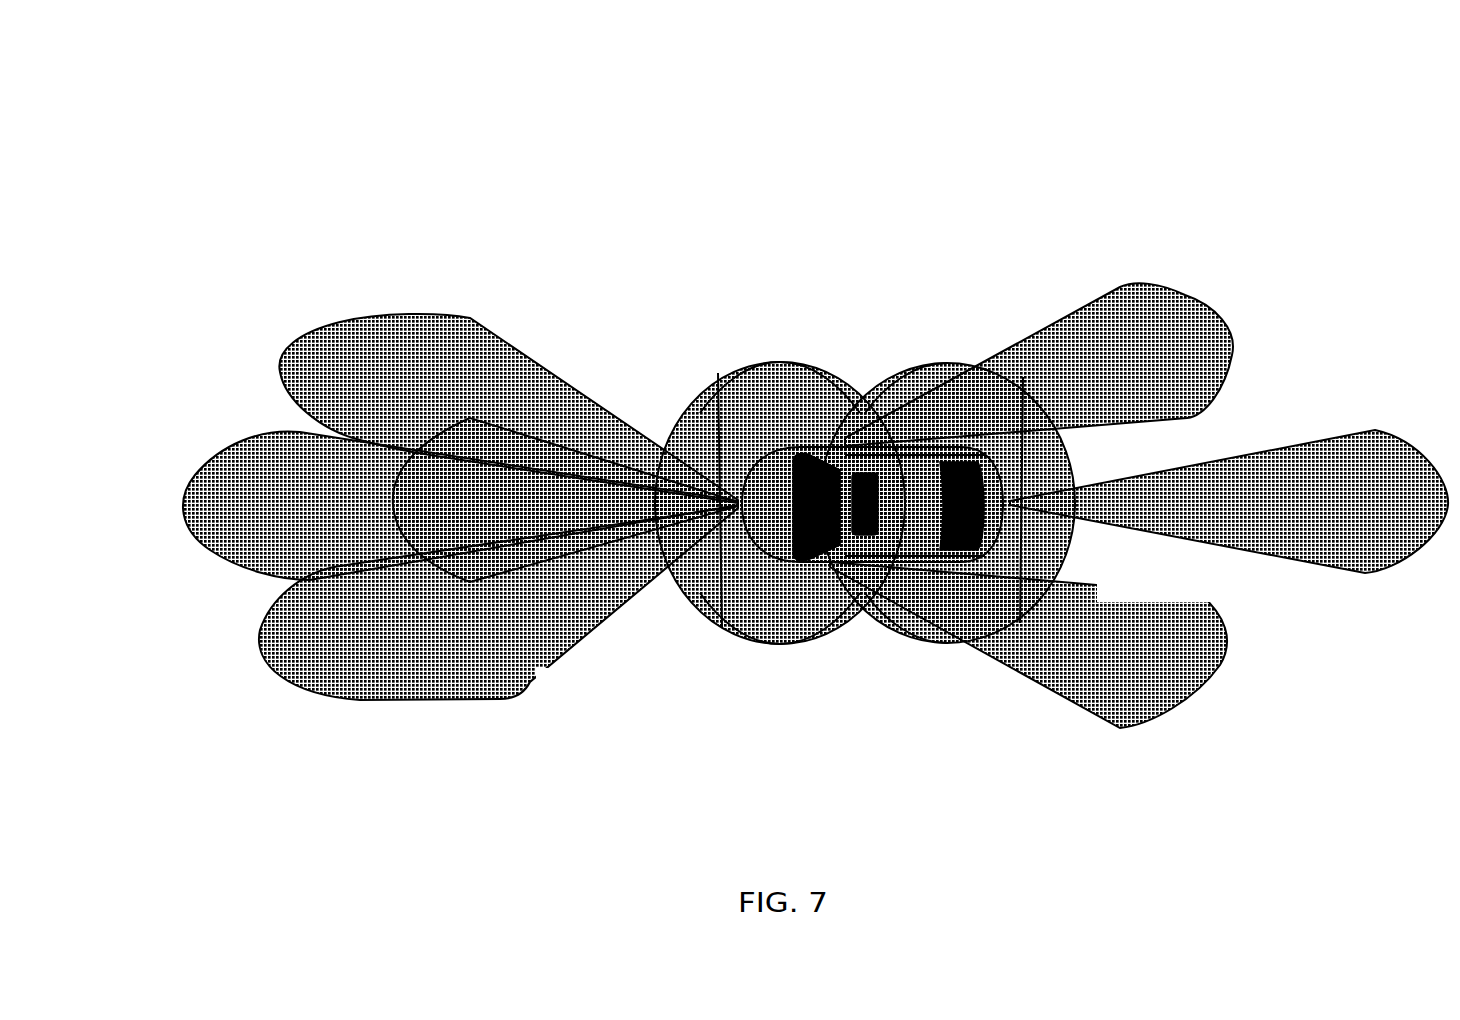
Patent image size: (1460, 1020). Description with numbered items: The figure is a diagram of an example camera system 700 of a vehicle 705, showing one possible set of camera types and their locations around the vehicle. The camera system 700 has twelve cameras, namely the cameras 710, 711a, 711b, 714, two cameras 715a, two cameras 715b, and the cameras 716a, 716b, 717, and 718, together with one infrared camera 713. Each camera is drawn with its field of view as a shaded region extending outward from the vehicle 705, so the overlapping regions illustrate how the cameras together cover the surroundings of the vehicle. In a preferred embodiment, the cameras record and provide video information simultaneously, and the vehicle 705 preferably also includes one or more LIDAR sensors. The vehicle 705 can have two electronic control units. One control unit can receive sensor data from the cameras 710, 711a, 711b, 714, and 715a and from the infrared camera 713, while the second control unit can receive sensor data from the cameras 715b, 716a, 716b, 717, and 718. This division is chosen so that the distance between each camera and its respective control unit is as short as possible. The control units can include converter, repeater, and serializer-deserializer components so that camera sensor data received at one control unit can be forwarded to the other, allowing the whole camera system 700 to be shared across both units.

The camera system 700 is at (224, 65).
The vehicle 705 is at (765, 466).
The camera 710 is at (410, 488).
The camera 711a is at (454, 373).
The camera 711b is at (473, 646).
The infrared camera 713 is at (565, 438).
The camera 714 is at (720, 528).
The camera 715a is at (823, 346).
The camera 715b is at (823, 673).
The camera 716a is at (1039, 310).
The camera 716b is at (1028, 688).
The camera 717 is at (1076, 503).
The camera 718 is at (1231, 471).